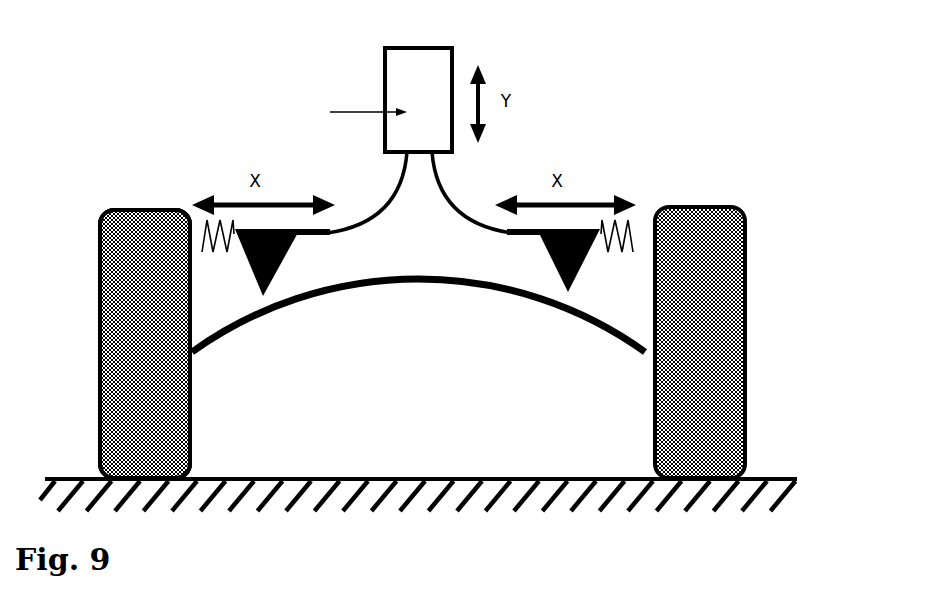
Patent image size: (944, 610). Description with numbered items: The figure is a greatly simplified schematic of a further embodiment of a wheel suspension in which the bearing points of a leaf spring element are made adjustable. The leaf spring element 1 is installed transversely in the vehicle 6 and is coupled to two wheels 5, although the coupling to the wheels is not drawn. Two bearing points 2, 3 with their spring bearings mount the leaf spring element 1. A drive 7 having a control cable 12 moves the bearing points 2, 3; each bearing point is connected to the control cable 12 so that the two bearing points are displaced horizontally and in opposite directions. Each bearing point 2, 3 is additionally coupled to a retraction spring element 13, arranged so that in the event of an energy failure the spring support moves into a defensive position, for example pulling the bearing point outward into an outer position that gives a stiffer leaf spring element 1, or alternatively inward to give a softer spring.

The leaf spring element 1 is at (408, 270).
The bearing point 2 is at (282, 270).
The bearing point 3 is at (552, 272).
The wheel 5 is at (173, 443).
The vehicle 6 is at (123, 205).
The drive 7 is at (351, 104).
The control cable 12 is at (425, 80).
The retraction spring element 13 is at (227, 240).